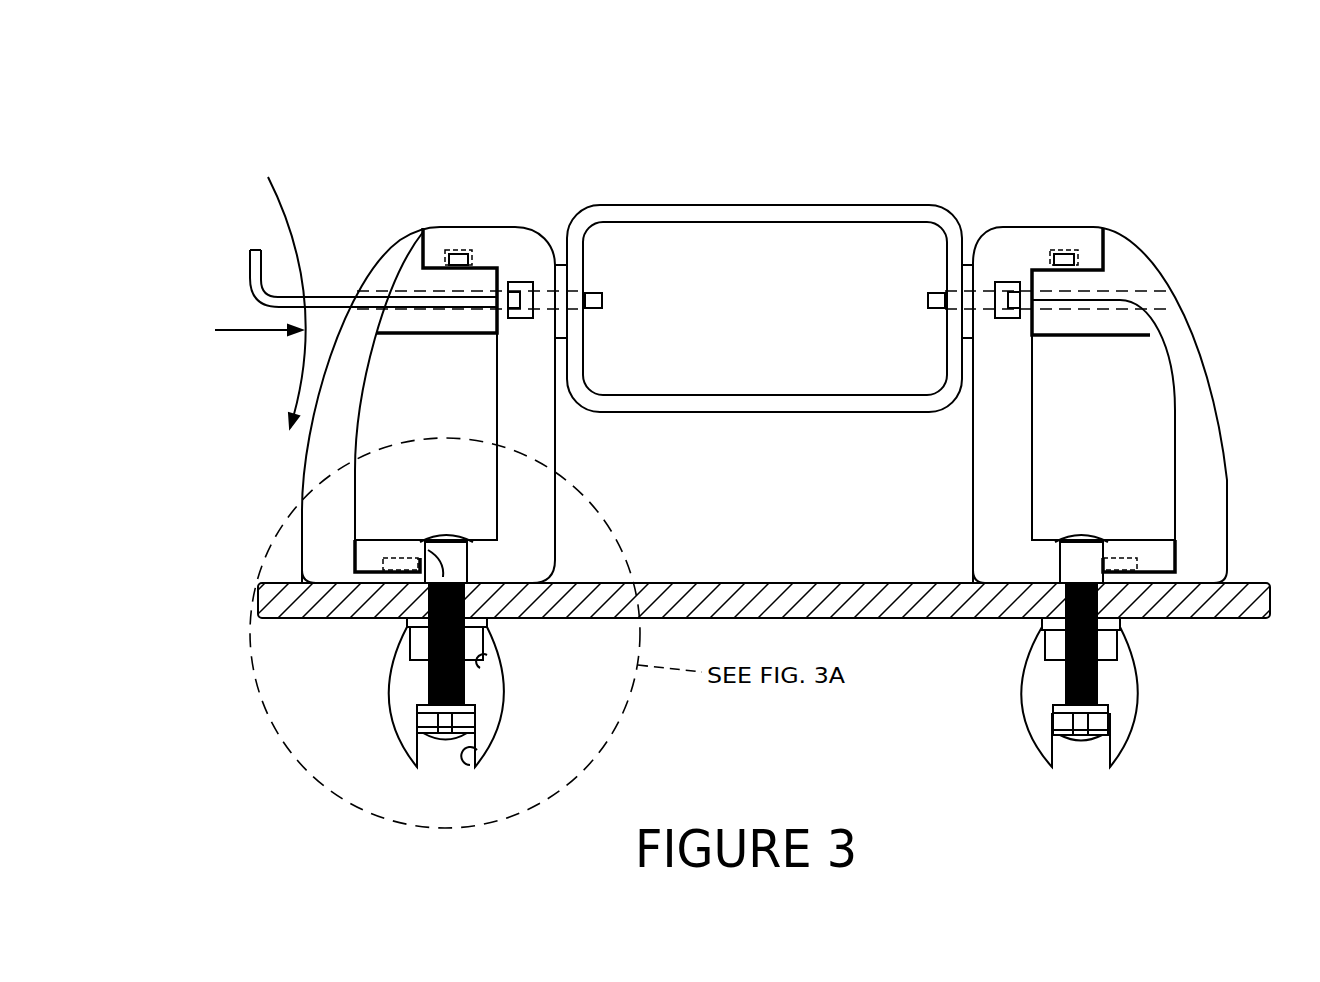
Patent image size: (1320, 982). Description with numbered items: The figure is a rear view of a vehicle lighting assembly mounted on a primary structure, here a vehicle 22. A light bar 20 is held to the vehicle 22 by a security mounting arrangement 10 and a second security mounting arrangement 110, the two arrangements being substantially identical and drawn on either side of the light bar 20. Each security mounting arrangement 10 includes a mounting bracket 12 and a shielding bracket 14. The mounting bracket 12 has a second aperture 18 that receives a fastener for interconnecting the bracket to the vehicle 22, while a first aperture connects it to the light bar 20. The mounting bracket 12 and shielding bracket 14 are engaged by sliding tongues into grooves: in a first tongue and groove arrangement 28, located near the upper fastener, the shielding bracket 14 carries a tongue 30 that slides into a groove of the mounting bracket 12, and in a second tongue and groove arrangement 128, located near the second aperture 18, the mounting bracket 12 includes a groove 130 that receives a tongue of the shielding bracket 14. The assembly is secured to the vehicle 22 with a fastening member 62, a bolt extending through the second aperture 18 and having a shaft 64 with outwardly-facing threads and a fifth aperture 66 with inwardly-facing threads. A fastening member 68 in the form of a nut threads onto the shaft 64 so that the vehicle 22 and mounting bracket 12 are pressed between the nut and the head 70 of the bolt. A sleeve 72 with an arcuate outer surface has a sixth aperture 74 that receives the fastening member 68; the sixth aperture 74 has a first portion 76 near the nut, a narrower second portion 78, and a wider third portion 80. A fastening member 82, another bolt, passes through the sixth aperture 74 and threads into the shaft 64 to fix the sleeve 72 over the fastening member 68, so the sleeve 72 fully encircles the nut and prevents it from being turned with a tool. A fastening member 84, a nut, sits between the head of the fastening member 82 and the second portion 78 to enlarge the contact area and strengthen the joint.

The security mounting arrangement 10 is at (462, 155).
The mounting bracket 12 is at (533, 487).
The shielding bracket 14 is at (332, 503).
The second aperture 18 is at (407, 620).
The light bar 20 is at (790, 195).
The vehicle 22 is at (872, 610).
The first tongue and groove arrangement 28 is at (500, 212).
The tongue 30 is at (455, 250).
The fastening member 62 is at (447, 480).
The shaft 64 is at (427, 683).
The fifth aperture 66 is at (423, 700).
The fastening member 68 is at (472, 648).
The head 70 is at (437, 538).
The sleeve 72 is at (400, 668).
The sixth aperture 74 is at (580, 710).
The first portion 76 is at (483, 660).
The second portion 78 is at (463, 697).
The third portion 80 is at (477, 775).
The fastening member 82 is at (448, 737).
The fastening member 84 is at (417, 748).
The second security mounting arrangement 110 is at (1118, 212).
The second tongue and groove arrangement 128 is at (347, 558).
The groove 130 is at (365, 566).